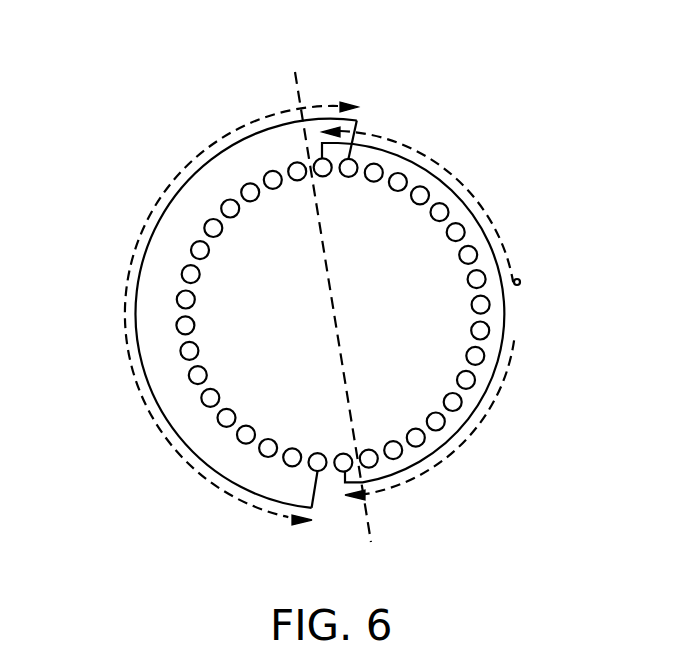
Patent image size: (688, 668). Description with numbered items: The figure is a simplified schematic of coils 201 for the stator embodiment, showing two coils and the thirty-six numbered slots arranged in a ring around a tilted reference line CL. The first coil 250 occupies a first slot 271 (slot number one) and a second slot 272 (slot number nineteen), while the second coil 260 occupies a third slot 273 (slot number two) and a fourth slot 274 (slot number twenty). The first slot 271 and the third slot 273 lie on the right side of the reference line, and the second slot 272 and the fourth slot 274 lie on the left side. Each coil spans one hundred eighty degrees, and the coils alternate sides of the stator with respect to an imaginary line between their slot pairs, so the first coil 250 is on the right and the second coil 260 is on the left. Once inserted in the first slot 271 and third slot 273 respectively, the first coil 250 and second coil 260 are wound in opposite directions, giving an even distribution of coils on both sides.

The coils 201 is at (127, 92).
The first coil 250 is at (442, 168).
The second coil 260 is at (263, 115).
The first slot 271 is at (323, 177).
The second slot 272 is at (345, 452).
The third slot 273 is at (348, 177).
The fourth slot 274 is at (320, 452).